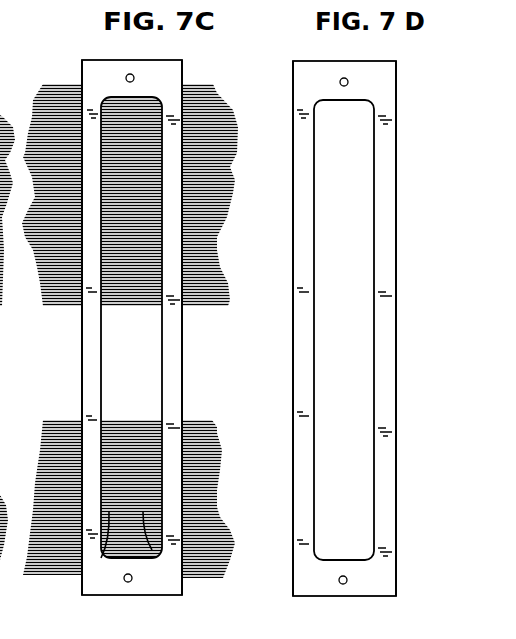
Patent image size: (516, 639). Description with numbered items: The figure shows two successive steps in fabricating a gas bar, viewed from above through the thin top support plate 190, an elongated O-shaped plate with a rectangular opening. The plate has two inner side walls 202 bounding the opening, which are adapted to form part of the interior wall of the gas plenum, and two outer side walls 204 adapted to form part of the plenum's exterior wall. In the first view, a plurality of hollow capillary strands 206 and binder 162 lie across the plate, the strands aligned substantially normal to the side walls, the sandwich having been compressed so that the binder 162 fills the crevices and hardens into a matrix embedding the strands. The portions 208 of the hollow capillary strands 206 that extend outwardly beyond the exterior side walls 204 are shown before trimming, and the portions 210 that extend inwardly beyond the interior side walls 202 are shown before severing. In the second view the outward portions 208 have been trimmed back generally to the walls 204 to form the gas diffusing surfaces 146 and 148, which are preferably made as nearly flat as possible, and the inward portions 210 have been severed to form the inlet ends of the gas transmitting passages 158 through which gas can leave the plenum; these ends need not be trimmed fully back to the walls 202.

In FIG. 7C, the thin top support plate 190 is at (172, 72).
In FIG. 7D, the thin top support plate 190 is at (304, 80).
In FIG. 7C, the outer side walls 204 is at (80, 337).
In FIG. 7C, the hollow capillary strands 206 is at (81, 327).
In FIG. 7C, the binder 162 is at (133, 290).
In FIG. 7D, the binder 162 is at (374, 449).
In FIG. 7C, the inner side walls 202 is at (162, 392).
In FIG. 7C, the outwardly extending portions of hollow capillary strands 208 is at (67, 471).
In FIG. 7C, the inwardly extending portions of hollow capillary strands 210 is at (101, 558).
In FIG. 7D, the gas diffusing surface 146 is at (293, 158).
In FIG. 7D, the gas diffusing surface 148 is at (396, 172).
In FIG. 7D, the gas transmitting passages 158 is at (308, 330).